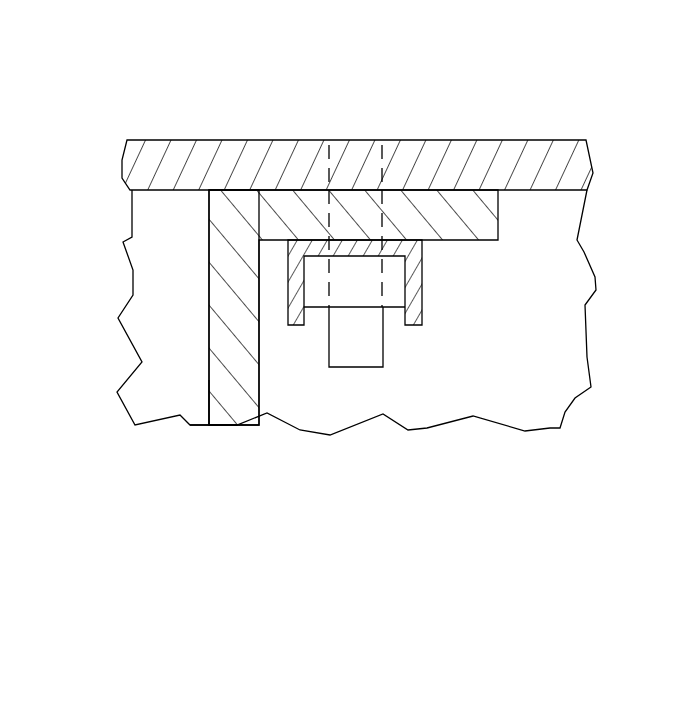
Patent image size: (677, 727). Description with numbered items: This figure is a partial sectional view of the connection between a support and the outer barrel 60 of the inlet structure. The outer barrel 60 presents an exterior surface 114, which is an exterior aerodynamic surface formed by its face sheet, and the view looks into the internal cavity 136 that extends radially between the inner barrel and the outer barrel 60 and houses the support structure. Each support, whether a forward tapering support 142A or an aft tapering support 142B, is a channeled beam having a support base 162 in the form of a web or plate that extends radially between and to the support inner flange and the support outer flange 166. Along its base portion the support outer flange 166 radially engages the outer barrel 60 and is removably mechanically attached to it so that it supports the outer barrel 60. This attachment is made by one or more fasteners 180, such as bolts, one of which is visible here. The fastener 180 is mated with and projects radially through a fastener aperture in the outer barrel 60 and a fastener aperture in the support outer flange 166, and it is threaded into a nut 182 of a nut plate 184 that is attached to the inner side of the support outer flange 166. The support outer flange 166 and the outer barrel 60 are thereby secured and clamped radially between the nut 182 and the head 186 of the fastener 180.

The outer barrel 60 is at (604, 138).
The exterior surface 114 is at (178, 140).
The head 186 is at (410, 168).
The support outer flange 166 is at (498, 214).
The internal cavity 136 is at (148, 336).
The forward tapering support 142A is at (243, 436).
The aft tapering support 142B is at (234, 307).
The support base 162 is at (209, 386).
The fastener 180 is at (359, 388).
The nut plate 184 is at (422, 300).
The nut 182 is at (396, 308).